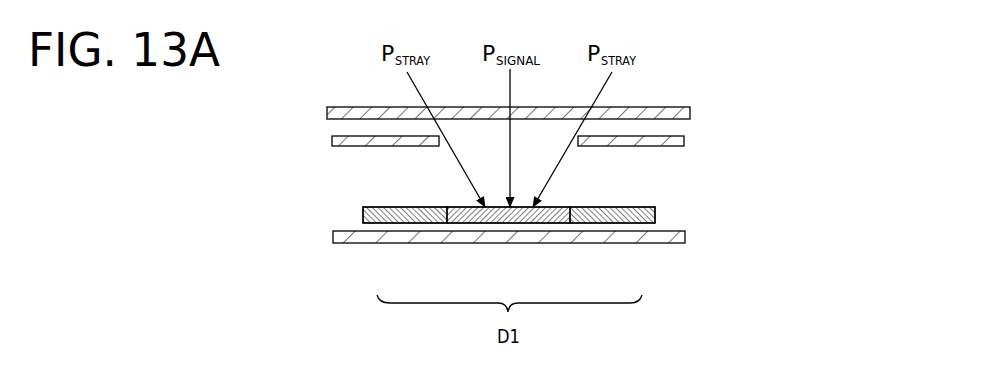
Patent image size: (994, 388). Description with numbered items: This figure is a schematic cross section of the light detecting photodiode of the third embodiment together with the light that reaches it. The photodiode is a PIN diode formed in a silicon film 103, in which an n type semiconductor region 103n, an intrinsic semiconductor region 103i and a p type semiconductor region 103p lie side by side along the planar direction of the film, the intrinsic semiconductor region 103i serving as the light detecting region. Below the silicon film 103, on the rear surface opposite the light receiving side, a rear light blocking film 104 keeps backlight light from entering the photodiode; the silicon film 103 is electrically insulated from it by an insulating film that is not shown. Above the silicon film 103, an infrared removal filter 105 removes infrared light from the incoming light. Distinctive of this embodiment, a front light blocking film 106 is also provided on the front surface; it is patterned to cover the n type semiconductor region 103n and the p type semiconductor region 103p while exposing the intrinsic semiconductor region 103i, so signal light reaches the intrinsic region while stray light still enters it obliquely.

The silicon film 103 is at (542, 248).
The p type semiconductor region 103p is at (403, 231).
The intrinsic semiconductor region 103i is at (510, 231).
The n type semiconductor region 103n is at (612, 231).
The rear light blocking film 104 is at (685, 237).
The infrared removal filter 105 is at (690, 113).
The front light blocking film 106 is at (332, 141).